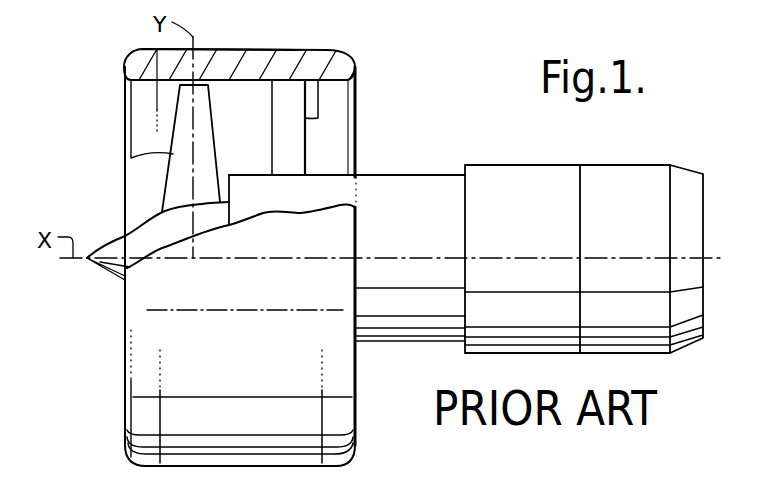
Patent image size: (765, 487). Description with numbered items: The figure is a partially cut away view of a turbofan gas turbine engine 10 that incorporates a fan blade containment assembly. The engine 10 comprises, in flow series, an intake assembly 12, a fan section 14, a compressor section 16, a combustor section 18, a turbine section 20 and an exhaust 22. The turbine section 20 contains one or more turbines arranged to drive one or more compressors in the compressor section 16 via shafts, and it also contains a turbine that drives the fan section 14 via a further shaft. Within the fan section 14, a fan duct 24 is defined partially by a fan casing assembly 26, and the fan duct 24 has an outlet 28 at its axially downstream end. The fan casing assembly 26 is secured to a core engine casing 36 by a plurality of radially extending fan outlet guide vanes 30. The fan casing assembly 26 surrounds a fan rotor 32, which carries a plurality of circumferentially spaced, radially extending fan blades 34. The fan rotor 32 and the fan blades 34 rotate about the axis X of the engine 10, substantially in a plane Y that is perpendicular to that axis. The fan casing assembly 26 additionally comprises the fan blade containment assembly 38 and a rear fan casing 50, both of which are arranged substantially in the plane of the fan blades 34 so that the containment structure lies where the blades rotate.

The turbofan gas turbine engine 10 is at (452, 86).
The intake assembly 12 is at (128, 59).
The fan section 14 is at (106, 115).
The compressor section 16 is at (433, 207).
The combustor section 18 is at (505, 197).
The turbine section 20 is at (620, 190).
The exhaust 22 is at (687, 193).
The fan duct 24 is at (258, 137).
The fan casing assembly 26 is at (208, 46).
The outlet 28 is at (356, 88).
The fan outlet guide vanes 30 is at (319, 118).
The fan rotor 32 is at (122, 241).
The fan blades 34 is at (124, 157).
The core engine casing 36 is at (418, 170).
The fan blade containment assembly 38 is at (167, 48).
The rear fan casing 50 is at (303, 60).